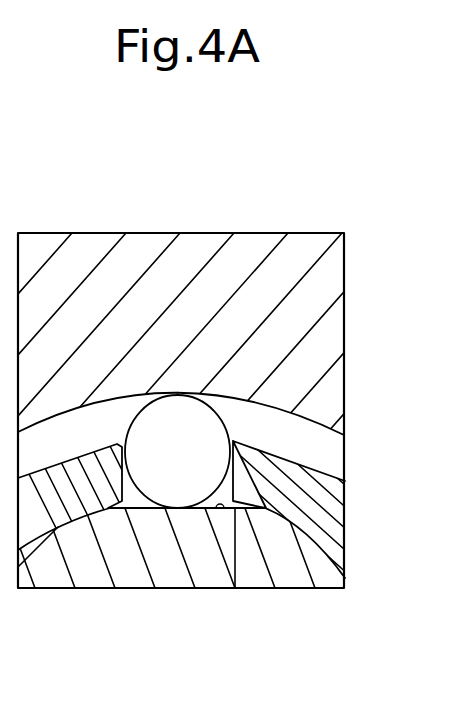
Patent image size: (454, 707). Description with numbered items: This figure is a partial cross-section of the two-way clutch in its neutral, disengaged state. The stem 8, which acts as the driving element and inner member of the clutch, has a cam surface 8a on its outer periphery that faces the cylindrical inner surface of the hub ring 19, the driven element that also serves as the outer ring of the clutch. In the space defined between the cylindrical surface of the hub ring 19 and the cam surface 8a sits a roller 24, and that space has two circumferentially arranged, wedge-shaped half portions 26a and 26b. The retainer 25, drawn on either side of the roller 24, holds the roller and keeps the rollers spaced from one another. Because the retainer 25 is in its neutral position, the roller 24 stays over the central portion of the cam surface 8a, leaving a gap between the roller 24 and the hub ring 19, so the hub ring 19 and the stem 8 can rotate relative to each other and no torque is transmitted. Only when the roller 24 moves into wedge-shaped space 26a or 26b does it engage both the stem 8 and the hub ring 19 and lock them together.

The stem 8 is at (123, 567).
The cam surface 8a is at (235, 588).
The hub ring 19 is at (322, 348).
The roller 24 is at (177, 425).
The retainer 25 is at (313, 502).
The wedge-shaped space 26a is at (103, 427).
The wedge-shaped space 26b is at (242, 423).